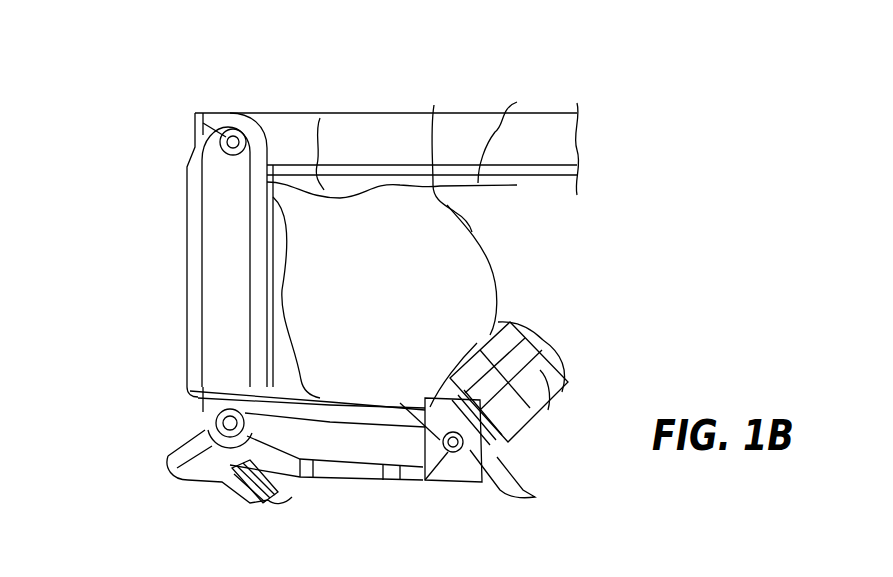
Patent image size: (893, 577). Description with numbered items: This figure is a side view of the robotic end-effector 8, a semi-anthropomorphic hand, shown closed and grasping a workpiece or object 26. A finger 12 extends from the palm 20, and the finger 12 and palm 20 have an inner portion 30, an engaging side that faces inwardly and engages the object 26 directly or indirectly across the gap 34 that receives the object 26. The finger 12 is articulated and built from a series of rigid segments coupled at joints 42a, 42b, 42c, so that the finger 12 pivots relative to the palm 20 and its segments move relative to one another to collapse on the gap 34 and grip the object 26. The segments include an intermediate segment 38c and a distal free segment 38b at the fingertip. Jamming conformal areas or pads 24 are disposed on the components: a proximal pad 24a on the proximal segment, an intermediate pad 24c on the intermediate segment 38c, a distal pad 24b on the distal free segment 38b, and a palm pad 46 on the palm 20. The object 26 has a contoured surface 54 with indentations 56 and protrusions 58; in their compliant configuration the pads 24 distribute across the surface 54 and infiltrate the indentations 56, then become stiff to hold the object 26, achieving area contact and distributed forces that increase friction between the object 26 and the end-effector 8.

The robotic end-effector 8 is at (585, 131).
The finger 12 is at (187, 348).
The palm 20 is at (380, 133).
The jamming conformal area or pad 24 is at (320, 118).
The proximal pad 24a is at (267, 279).
The distal pad 24b is at (523, 347).
The intermediate pad 24c is at (500, 453).
The workpiece or object 26 is at (411, 285).
The inner portion 30 is at (293, 203).
The gap 34 is at (546, 259).
The distal free segment 38b is at (540, 370).
The intermediate segment 38c is at (190, 450).
The joint 42a is at (226, 137).
The joint 42b is at (217, 410).
The joint 42c is at (440, 442).
The palm pad 46 is at (517, 102).
The surface 54 is at (463, 228).
The indentation 56 is at (404, 223).
The protrusion 58 is at (434, 105).